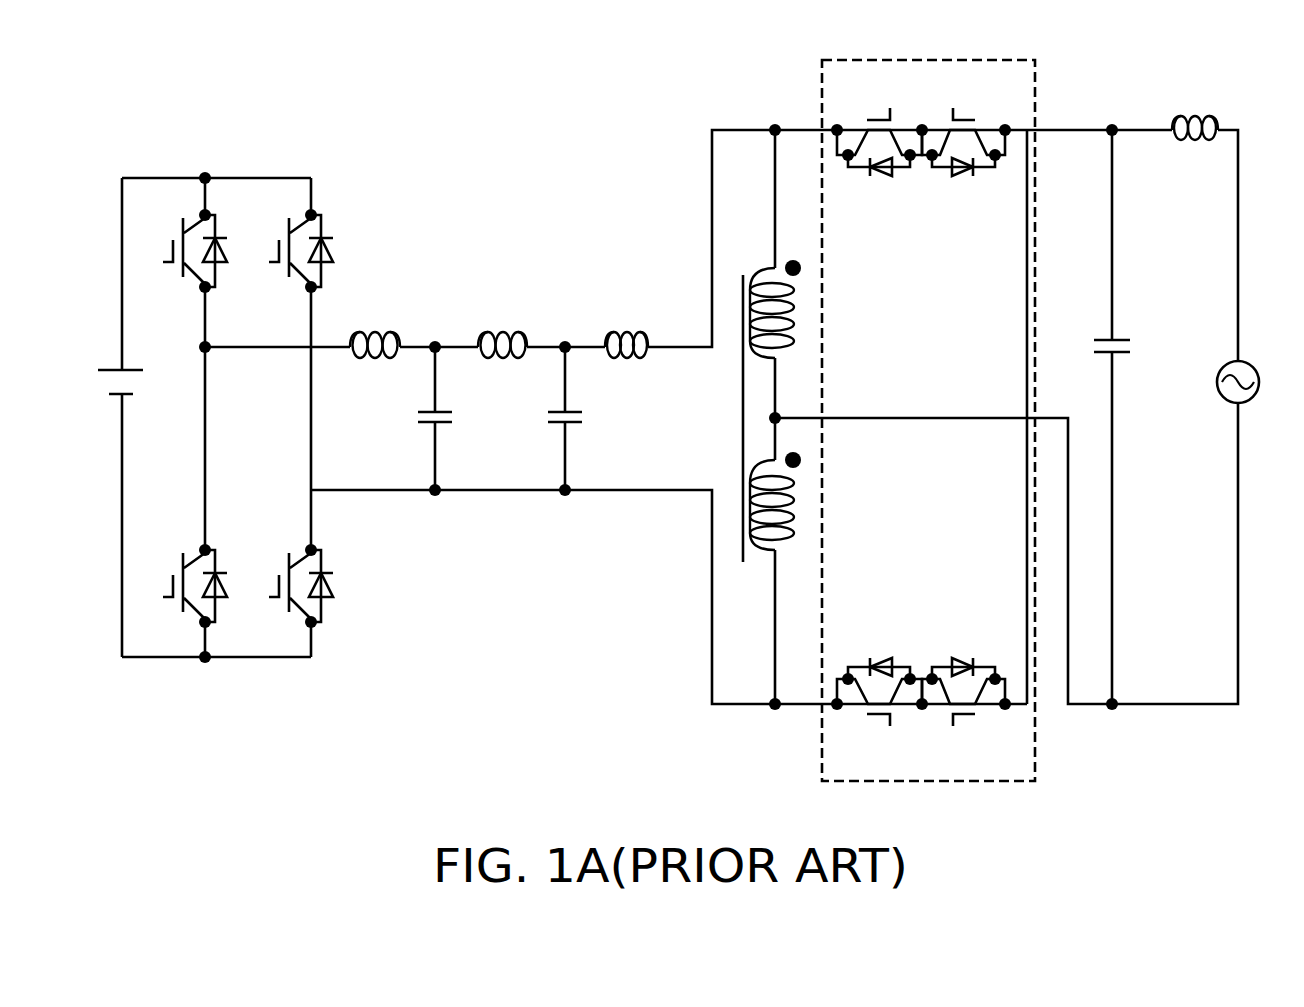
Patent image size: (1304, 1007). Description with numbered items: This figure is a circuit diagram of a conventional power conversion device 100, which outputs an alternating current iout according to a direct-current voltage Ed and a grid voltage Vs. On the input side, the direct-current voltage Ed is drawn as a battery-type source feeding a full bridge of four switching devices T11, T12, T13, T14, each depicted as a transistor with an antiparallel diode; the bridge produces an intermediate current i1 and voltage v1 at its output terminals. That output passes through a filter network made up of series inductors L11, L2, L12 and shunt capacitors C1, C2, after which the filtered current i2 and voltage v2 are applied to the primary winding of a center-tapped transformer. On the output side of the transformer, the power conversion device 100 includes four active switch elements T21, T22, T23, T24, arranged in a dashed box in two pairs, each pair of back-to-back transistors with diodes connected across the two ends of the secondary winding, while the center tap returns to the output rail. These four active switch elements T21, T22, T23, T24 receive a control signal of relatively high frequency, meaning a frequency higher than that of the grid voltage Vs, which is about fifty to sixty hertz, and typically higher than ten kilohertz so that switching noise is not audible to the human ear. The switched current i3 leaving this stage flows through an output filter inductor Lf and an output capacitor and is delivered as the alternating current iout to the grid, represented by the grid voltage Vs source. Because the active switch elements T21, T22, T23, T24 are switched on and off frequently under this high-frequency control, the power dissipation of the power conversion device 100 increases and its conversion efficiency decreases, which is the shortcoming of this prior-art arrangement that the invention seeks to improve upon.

The power conversion device 100 is at (1303, 42).
The IGBT switching element of inverter T11 is at (177, 249).
The IGBT switching element of inverter T12 is at (177, 585).
The IGBT switching element of inverter T13 is at (283, 249).
The IGBT switching element of inverter T14 is at (283, 585).
The direct-current voltage Ed is at (100, 341).
The inverter output current i1 is at (322, 358).
The inverter output voltage v1 is at (341, 389).
The filter inductor L11 is at (377, 328).
The filter inductor L2 is at (502, 328).
The filter inductor L12 is at (630, 328).
The filter capacitor C1 is at (455, 415).
The filter capacitor C2 is at (585, 415).
The transformer primary current i2 is at (740, 141).
The transformer primary voltage v2 is at (757, 222).
The active switch element T21 is at (969, 123).
The active switch element T22 is at (969, 708).
The active switch element T23 is at (879, 123).
The active switch element T24 is at (879, 708).
The cycloconverter output current i3 is at (1062, 141).
The output filter inductor Lf is at (1140, 141).
The alternating current iout is at (1190, 178).
The grid voltage Vs is at (1258, 382).